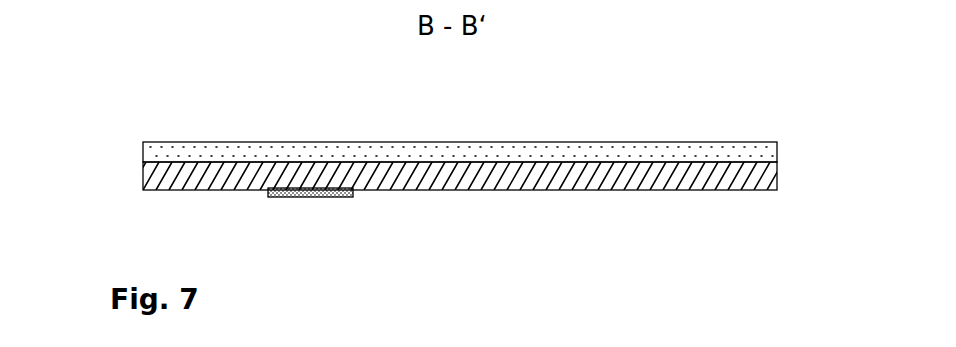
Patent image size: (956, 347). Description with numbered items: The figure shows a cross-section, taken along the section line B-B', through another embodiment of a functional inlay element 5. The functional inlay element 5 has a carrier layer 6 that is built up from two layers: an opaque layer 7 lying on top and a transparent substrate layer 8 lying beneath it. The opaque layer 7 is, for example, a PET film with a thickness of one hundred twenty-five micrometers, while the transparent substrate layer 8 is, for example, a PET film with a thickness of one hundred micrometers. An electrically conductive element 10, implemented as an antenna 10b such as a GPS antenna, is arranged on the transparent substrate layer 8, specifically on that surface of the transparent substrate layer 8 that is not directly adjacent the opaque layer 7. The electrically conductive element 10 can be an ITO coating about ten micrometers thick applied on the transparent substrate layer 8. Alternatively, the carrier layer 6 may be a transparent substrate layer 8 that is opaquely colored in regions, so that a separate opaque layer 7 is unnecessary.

The functional inlay element 5 is at (143, 79).
The carrier layer 6 is at (132, 163).
The opaque layer 7 is at (230, 153).
The transparent substrate layer 8 is at (480, 178).
The electrically conductive element 10 is at (293, 196).
The antenna 10b is at (335, 234).